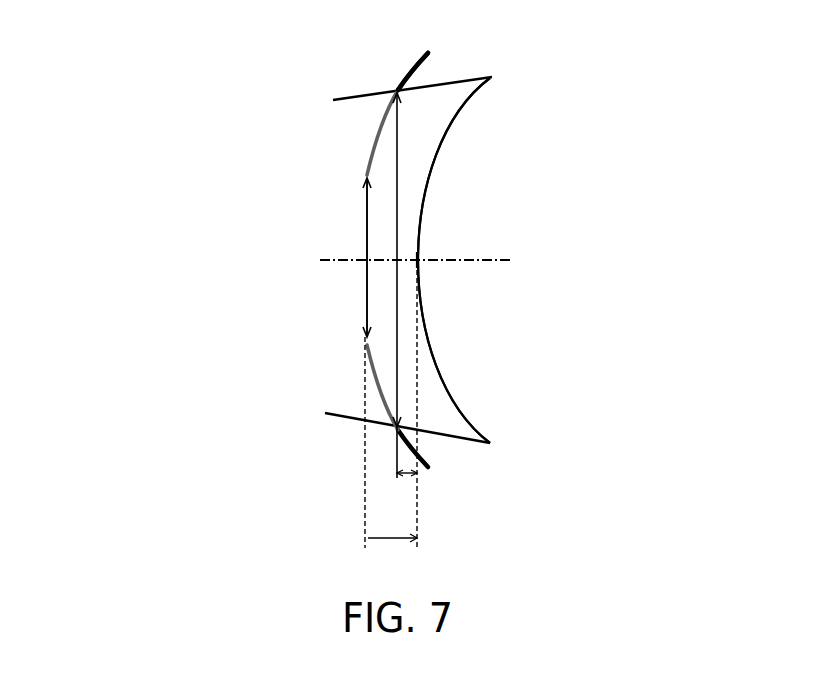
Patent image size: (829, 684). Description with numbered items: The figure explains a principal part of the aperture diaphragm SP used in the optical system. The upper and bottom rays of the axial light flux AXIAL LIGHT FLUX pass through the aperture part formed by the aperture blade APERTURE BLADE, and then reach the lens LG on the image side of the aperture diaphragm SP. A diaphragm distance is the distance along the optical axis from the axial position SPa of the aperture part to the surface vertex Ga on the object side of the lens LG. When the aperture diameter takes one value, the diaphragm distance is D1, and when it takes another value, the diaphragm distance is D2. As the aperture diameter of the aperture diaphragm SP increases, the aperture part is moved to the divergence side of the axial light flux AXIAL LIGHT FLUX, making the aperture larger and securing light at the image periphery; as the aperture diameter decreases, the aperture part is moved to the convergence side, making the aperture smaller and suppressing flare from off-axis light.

The aperture diaphragm SP is at (394, 73).
The axial position of the aperture part SPa is at (363, 265).
The surface vertex Ga is at (420, 263).
The lens LG is at (458, 368).
The diaphragm distance D1 is at (399, 405).
The diaphragm distance D2 is at (391, 455).
The aperture blade APERTURE BLADE is at (423, 65).
The axial light flux AXIAL LIGHT FLUX is at (325, 411).